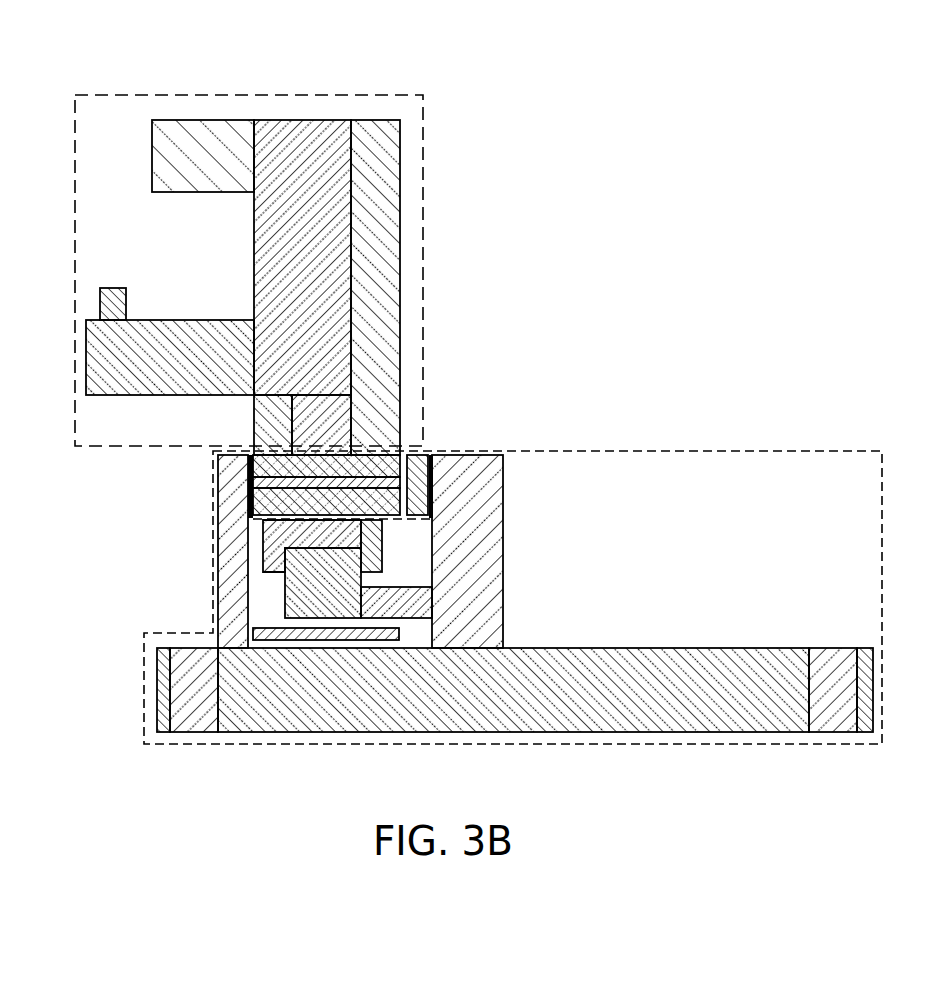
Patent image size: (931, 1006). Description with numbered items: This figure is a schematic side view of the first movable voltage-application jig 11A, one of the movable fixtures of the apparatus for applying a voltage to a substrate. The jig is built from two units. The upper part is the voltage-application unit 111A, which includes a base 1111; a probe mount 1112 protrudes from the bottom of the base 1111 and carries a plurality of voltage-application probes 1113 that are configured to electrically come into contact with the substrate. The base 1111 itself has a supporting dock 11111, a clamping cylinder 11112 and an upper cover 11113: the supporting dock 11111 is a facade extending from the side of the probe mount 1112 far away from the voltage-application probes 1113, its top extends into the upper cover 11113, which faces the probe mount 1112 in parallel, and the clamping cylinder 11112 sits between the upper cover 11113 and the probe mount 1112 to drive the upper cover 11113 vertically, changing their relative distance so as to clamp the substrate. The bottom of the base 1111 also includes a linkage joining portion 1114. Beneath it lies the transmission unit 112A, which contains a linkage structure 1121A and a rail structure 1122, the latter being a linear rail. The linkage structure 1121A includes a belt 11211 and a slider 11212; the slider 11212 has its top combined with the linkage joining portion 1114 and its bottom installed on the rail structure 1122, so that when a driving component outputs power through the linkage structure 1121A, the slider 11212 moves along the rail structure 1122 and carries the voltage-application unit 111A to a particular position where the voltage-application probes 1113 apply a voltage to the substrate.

The base 1111 is at (276, 236).
The supporting dock 11111 is at (375, 258).
The clamping cylinder 11112 is at (300, 147).
The upper cover 11113 is at (213, 153).
The probe mount 1112 is at (87, 348).
The voltage-application probe 1113 is at (100, 293).
The linkage joining portion 1114 is at (403, 453).
The voltage-application unit 111A is at (427, 267).
The transmission unit 112A is at (513, 559).
The first movable voltage-application jig 11A is at (478, 419).
The linkage structure 1121A is at (241, 513).
The belt 11211 is at (252, 490).
The slider 11212 is at (300, 543).
The rail structure 1122 is at (300, 595).